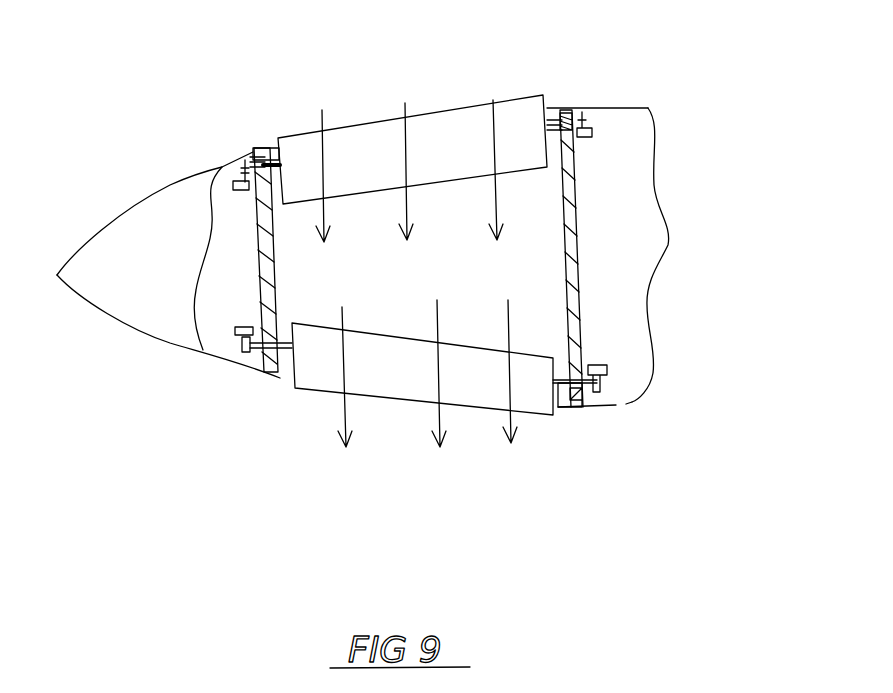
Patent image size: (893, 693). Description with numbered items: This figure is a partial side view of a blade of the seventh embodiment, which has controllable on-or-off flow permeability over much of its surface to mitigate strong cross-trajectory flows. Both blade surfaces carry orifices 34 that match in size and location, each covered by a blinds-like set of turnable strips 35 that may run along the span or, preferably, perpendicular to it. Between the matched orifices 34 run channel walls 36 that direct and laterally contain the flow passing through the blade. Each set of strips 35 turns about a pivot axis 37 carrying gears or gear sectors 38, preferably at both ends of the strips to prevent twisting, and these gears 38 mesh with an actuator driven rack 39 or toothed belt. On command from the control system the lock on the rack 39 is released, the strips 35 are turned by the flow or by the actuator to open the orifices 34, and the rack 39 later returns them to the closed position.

The orifices 34 is at (462, 238).
The turnable strips 35 is at (453, 122).
The channel walls 36 is at (275, 160).
The pivot axis 37 is at (268, 215).
The gears or gear sectors 38 is at (243, 338).
The actuator driven rack 39 is at (238, 180).